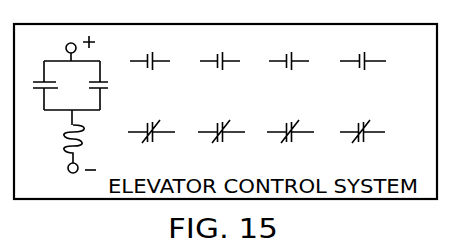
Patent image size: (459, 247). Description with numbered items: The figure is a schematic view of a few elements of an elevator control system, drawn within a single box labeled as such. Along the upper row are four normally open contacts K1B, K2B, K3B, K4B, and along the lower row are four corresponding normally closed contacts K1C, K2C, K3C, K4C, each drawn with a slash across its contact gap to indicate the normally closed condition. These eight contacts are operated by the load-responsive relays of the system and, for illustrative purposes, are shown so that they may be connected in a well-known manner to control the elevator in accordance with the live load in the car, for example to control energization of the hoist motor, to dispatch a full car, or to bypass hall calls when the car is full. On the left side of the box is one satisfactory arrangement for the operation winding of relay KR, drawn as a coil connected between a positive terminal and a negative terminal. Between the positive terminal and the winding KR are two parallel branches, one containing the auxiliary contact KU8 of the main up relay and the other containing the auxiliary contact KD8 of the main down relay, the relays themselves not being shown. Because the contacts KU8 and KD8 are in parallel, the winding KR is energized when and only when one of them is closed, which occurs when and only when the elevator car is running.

The auxiliary contact of the main up relay KU8 is at (33, 82).
The auxiliary contact of the main down relay KD8 is at (108, 82).
The operation winding of relay KR is at (66, 143).
The normally open contact K1B is at (150, 48).
The normally open contact K2B is at (220, 48).
The normally open contact K3B is at (288, 48).
The normally open contact K4B is at (363, 48).
The normally closed contact K1C is at (151, 148).
The normally closed contact K2C is at (221, 148).
The normally closed contact K3C is at (290, 148).
The normally closed contact K4C is at (362, 148).